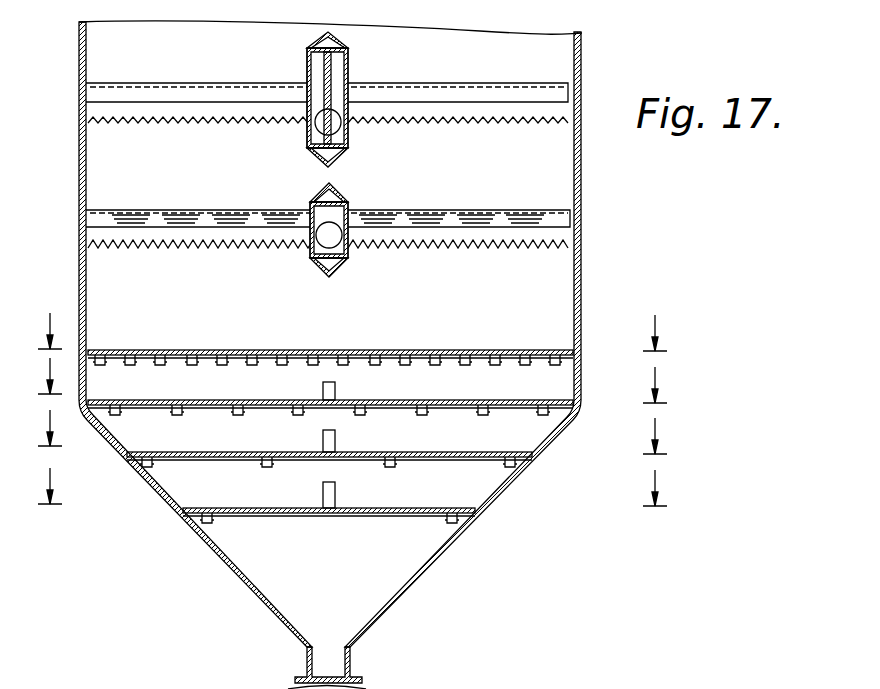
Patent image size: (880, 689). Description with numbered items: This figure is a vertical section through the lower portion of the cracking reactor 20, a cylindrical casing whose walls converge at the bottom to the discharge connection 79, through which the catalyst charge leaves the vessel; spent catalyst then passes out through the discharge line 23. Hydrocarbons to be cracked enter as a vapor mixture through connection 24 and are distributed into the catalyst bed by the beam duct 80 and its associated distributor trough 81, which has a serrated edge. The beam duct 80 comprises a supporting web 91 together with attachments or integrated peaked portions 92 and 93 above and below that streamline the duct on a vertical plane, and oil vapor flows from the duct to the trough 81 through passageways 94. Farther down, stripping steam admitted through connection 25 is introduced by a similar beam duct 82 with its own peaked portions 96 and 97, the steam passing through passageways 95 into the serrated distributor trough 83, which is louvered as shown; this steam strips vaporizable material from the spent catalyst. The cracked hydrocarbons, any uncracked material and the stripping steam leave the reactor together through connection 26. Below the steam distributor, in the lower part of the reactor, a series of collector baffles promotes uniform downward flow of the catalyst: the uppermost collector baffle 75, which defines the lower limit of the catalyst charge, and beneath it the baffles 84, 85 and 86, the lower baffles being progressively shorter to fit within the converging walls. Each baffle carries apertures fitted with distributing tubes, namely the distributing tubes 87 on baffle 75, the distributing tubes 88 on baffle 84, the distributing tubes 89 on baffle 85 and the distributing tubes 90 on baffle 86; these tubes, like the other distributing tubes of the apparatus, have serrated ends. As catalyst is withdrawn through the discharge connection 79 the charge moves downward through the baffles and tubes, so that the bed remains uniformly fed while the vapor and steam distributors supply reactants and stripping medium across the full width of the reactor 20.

The cracking reactor 20 is at (582, 47).
The spent catalyst discharge line 23 is at (364, 332).
The hydrocarbon vapor inlet connection 24 is at (364, 380).
The steam inlet connection 25 is at (364, 432).
The vapor outlet connection 26 is at (364, 487).
The collector baffle 75 is at (330, 349).
The discharge connection 79 is at (352, 658).
The beam duct 80 is at (336, 95).
The distributor trough 81 is at (471, 83).
The beam duct 82 is at (344, 238).
The distributor trough 83 is at (488, 213).
The collector baffle 84 is at (330, 406).
The collector baffle 85 is at (329, 457).
The collector baffle 86 is at (329, 516).
The distributing tube 87 is at (250, 362).
The distributing tube 88 is at (240, 410).
The distributing tube 89 is at (386, 466).
The distributing tube 90 is at (438, 499).
The supporting web 91 is at (307, 62).
The peaked portion 92 is at (320, 40).
The peaked portion 93 is at (306, 153).
The passageway 94 is at (341, 127).
The passageway 95 is at (310, 250).
The peaked portion 96 is at (318, 191).
The peaked portion 97 is at (316, 267).